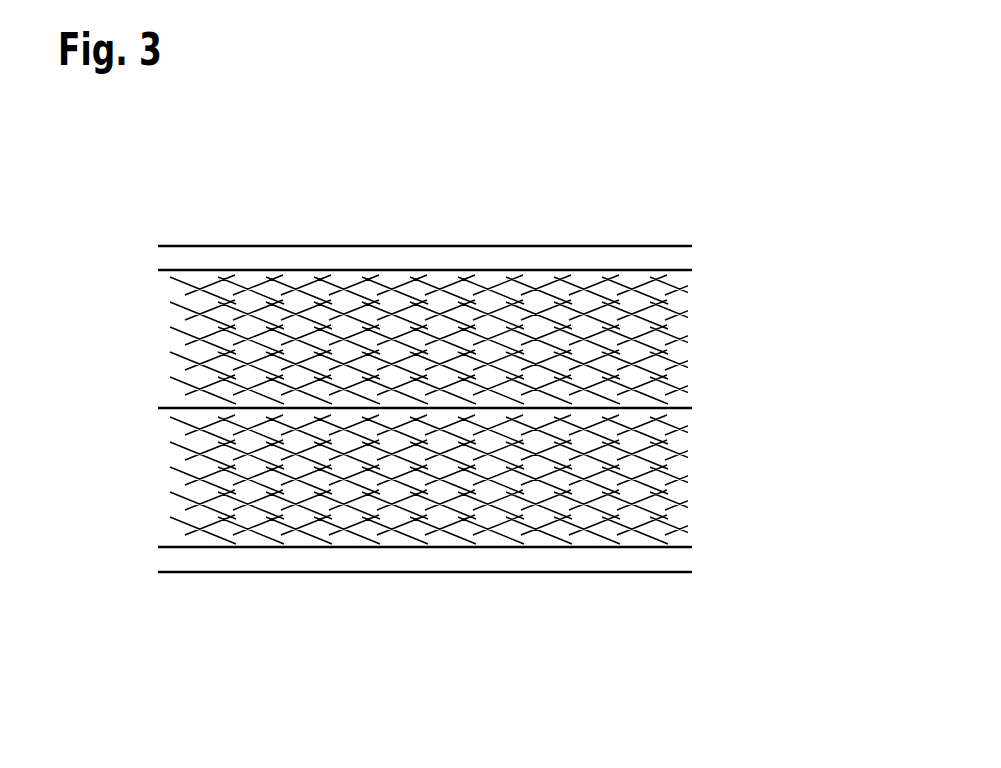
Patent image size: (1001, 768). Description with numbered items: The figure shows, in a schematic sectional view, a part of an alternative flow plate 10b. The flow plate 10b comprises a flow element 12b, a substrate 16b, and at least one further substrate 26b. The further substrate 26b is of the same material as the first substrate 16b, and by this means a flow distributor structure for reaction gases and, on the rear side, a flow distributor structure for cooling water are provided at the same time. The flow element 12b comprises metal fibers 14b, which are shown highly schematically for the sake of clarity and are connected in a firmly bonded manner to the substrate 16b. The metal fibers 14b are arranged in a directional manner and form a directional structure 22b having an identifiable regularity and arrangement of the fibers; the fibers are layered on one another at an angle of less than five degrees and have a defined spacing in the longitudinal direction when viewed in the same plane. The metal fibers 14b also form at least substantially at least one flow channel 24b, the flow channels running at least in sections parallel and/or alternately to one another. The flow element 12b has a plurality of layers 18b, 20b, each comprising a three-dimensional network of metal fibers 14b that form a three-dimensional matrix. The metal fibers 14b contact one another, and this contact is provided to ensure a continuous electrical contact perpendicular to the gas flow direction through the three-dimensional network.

The flow plate 10b is at (773, 238).
The further substrate 26b is at (478, 258).
The layer 20b is at (143, 335).
The flow channel 24b is at (647, 333).
The flow element 12b is at (135, 407).
The directional structure 22b is at (718, 407).
The layer 18b is at (143, 482).
The metal fibers 14b is at (645, 482).
The substrate 16b is at (480, 560).